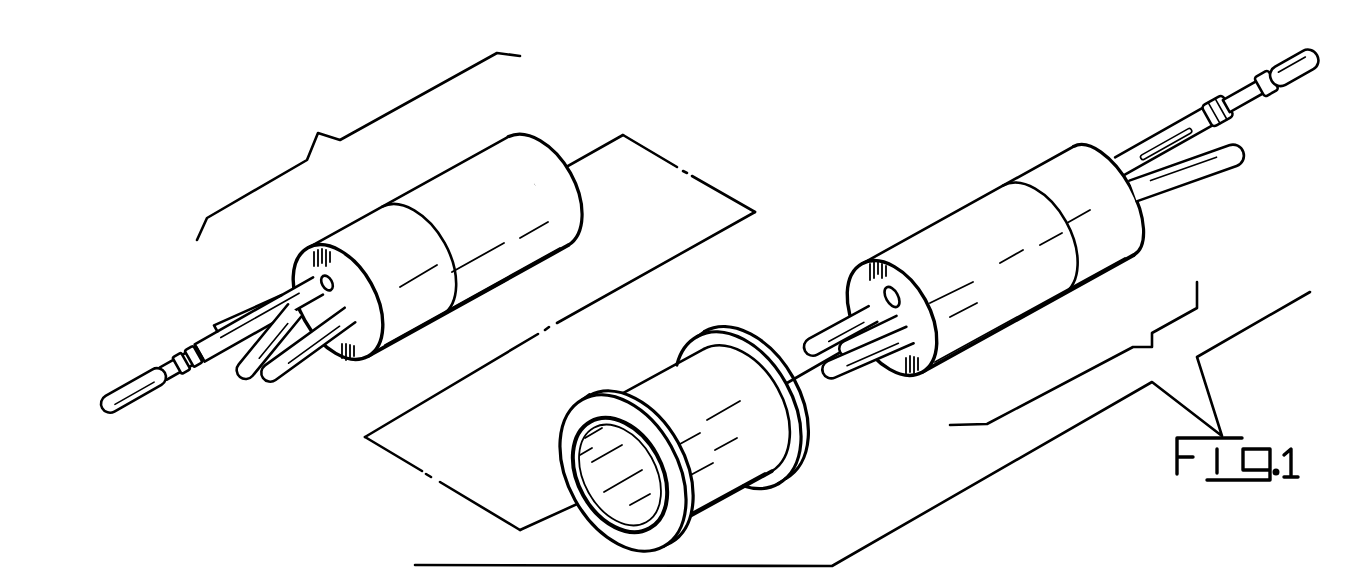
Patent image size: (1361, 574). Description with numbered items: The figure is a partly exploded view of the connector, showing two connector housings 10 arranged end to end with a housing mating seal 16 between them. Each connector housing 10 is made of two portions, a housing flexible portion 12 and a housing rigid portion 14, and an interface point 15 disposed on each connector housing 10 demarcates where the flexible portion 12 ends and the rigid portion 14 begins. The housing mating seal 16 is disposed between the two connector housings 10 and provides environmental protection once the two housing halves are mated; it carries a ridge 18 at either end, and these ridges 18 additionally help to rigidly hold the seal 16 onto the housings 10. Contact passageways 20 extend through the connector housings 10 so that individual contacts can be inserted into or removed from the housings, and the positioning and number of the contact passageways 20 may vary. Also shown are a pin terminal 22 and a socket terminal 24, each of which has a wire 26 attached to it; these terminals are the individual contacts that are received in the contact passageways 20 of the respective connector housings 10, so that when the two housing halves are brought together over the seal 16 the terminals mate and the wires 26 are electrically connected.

The connector housing 10 is at (697, 239).
The housing flexible portion 12 is at (709, 239).
The housing rigid portion 14 is at (461, 157).
The interface point 15 is at (398, 200).
The housing mating seal 16 is at (691, 450).
The ridge 18 is at (678, 534).
The contact passageway 20 is at (318, 284).
The pin terminal 22 is at (864, 380).
The socket terminal 24 is at (207, 390).
The wire 26 is at (142, 415).